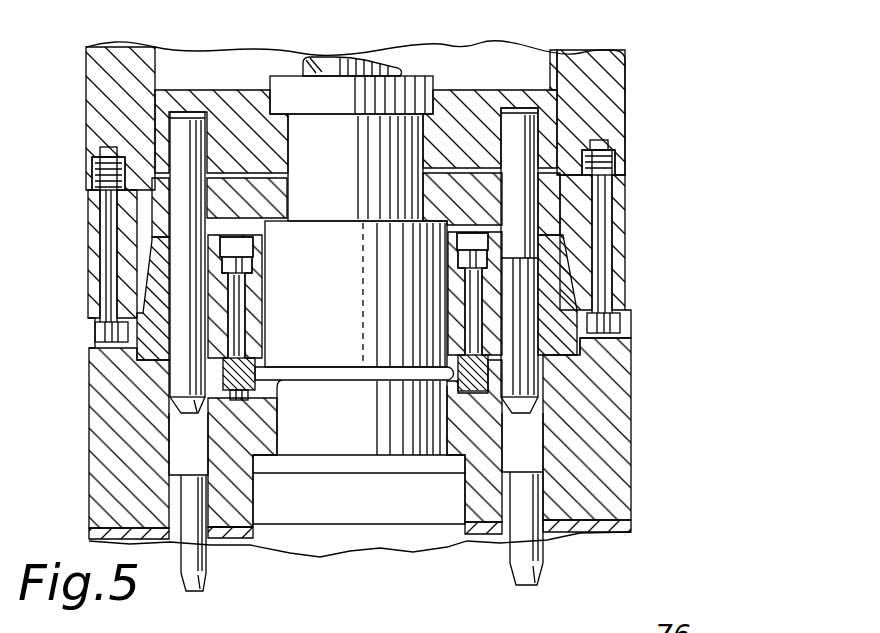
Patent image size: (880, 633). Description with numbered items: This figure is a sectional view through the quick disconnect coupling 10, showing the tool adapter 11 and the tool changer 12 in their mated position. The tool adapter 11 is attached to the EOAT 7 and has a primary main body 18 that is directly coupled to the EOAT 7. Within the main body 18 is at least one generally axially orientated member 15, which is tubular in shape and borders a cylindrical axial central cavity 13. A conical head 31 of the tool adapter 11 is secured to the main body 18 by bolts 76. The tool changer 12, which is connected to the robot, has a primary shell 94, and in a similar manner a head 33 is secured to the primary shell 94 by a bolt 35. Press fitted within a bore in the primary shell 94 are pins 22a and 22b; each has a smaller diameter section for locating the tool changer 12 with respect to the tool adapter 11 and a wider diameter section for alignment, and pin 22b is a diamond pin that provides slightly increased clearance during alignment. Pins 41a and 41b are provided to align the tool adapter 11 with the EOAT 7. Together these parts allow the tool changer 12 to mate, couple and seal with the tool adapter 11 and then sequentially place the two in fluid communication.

The EOAT 7 is at (90, 535).
The quick disconnect coupling 10 is at (68, 188).
The tool adapter 11 is at (86, 418).
The tool changer 12 is at (88, 92).
The cylindrical axial central cavity 13 is at (255, 527).
The axially orientated member 15 is at (330, 465).
The primary main body 18 is at (617, 415).
The pin 22a is at (519, 130).
The diamond pin 22b is at (181, 123).
The conical head 31 is at (163, 283).
The head 33 is at (616, 246).
The bolt 35 is at (110, 210).
The pin 41a is at (523, 553).
The pin 41b is at (208, 578).
The bolts 76 is at (250, 307).
The primary shell 94 is at (620, 62).